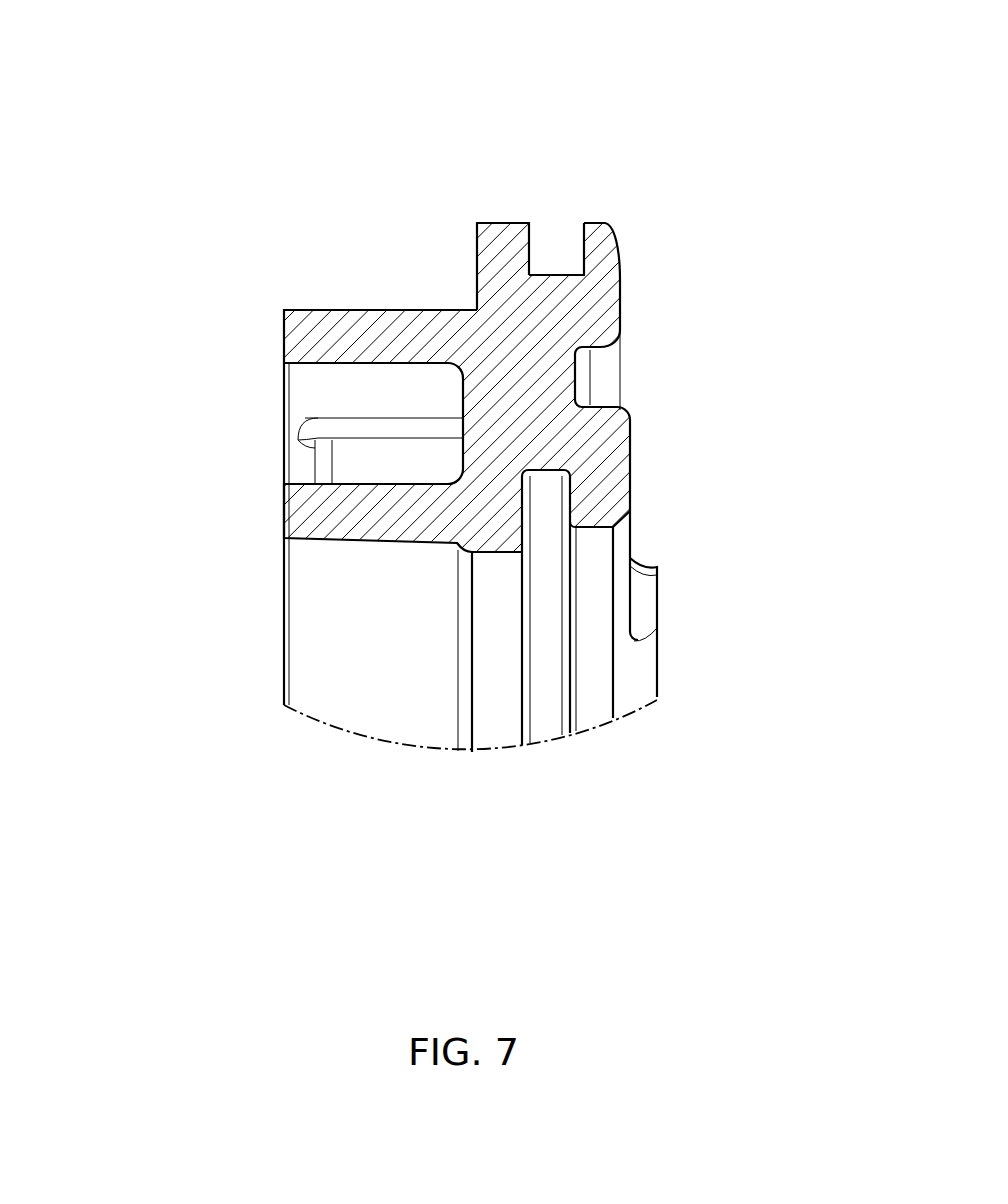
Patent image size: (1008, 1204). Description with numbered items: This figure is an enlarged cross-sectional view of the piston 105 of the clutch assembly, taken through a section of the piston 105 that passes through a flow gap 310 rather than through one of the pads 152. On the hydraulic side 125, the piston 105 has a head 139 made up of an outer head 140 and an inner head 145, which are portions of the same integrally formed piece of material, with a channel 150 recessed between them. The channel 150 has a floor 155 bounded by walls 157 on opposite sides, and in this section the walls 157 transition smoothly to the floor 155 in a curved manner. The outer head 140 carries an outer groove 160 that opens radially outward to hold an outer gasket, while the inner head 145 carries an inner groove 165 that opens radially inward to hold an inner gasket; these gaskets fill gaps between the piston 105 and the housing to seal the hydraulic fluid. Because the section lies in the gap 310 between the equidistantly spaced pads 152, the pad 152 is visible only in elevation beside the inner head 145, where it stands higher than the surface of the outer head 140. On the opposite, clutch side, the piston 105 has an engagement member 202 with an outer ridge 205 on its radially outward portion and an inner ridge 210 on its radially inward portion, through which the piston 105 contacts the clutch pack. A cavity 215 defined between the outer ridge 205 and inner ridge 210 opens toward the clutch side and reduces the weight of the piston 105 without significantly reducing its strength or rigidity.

The piston 105 is at (90, 90).
The head 139 is at (505, 245).
The outer groove 160 is at (558, 243).
The outer head 140 is at (590, 298).
The flow gap 310 is at (812, 219).
The engagement member 202 is at (305, 318).
The inner ridge 210 is at (366, 327).
The wall 157 is at (612, 357).
The channel 150 is at (620, 355).
The floor 155 is at (578, 364).
The hydraulic side 125 is at (812, 410).
The inner head 145 is at (587, 448).
The inner groove 165 is at (548, 505).
The pad 152 is at (643, 665).
The outer ridge 205 is at (313, 509).
The cavity 215 is at (330, 388).